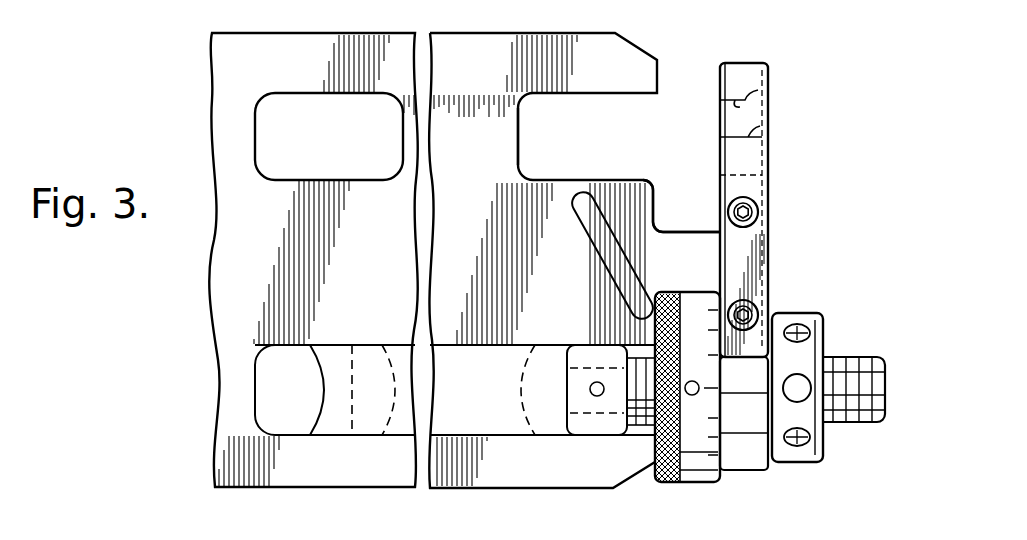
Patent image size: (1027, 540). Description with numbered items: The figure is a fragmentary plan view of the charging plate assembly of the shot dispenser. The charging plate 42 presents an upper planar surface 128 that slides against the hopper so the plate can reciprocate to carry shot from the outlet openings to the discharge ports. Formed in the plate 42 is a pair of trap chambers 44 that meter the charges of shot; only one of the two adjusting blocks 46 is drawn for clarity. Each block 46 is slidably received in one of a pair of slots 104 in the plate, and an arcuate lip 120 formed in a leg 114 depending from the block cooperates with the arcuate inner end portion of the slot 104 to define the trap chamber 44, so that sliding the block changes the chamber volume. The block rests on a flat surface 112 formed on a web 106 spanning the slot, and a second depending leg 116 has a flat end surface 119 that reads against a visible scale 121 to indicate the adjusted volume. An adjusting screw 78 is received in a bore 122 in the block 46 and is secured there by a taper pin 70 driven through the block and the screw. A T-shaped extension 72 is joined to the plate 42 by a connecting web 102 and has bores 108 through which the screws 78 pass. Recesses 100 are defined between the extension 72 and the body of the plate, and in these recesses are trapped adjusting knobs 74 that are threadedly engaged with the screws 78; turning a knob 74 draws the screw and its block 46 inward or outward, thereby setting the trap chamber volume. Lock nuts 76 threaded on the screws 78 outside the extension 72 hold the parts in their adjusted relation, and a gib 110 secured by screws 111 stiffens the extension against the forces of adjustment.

The charging plate 42 is at (620, 31).
The trap chamber 44 is at (262, 143).
The block 46 is at (524, 341).
The taper pin 70 is at (590, 385).
The T-shaped extension 72 is at (734, 63).
The adjusting knob 74 is at (696, 483).
The lock nut 76 is at (813, 463).
The adjusting screw 78 is at (848, 357).
The recess 100 is at (658, 200).
The connecting web 102 is at (704, 268).
The slot 104 is at (310, 350).
The web 106 is at (522, 140).
The bore 108 is at (770, 87).
The gib 110 is at (762, 134).
The screw 111 is at (760, 205).
The flat surface 112 is at (494, 156).
The leg 114 is at (353, 410).
The second depending leg 116 is at (562, 420).
The flat end surface 119 is at (632, 432).
The arcuate lip 120 is at (330, 394).
The visible scale 121 is at (581, 228).
The bore 122 is at (584, 410).
The upper planar surface 128 is at (398, 271).